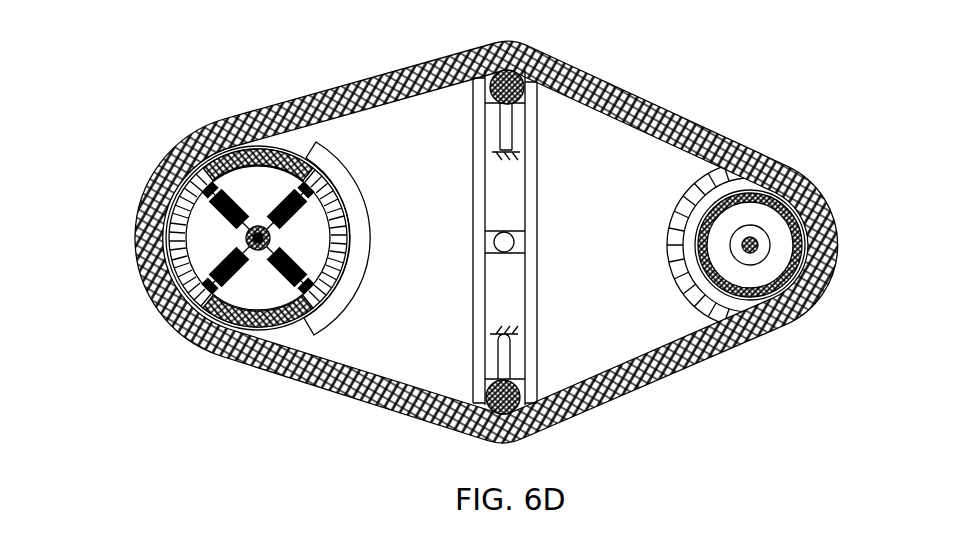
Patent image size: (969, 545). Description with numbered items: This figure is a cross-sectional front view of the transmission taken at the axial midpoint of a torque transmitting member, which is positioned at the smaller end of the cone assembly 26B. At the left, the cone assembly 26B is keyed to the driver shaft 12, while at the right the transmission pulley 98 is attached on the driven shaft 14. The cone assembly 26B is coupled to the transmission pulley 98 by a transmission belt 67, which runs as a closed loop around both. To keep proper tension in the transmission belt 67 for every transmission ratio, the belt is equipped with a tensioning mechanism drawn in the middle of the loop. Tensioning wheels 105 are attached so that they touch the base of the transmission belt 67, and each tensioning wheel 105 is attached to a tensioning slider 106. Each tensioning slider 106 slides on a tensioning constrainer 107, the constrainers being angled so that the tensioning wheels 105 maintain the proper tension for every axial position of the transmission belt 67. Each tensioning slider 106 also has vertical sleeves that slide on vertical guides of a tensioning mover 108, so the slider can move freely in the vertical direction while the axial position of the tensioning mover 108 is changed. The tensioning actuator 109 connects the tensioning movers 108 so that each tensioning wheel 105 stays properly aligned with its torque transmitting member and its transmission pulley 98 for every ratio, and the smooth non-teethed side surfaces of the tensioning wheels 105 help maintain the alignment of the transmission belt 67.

The driver shaft 12 is at (250, 235).
The cone assembly 26B is at (150, 296).
The transmission belt 67 is at (708, 132).
The tensioning wheel 105 is at (507, 102).
The tensioning slider 106 is at (474, 82).
The tensioning constrainer 107 is at (506, 138).
The tensioning mover 108 is at (527, 214).
The tensioning actuator 109 is at (504, 244).
The driven shaft 14 is at (756, 248).
The transmission pulley 98 is at (748, 295).